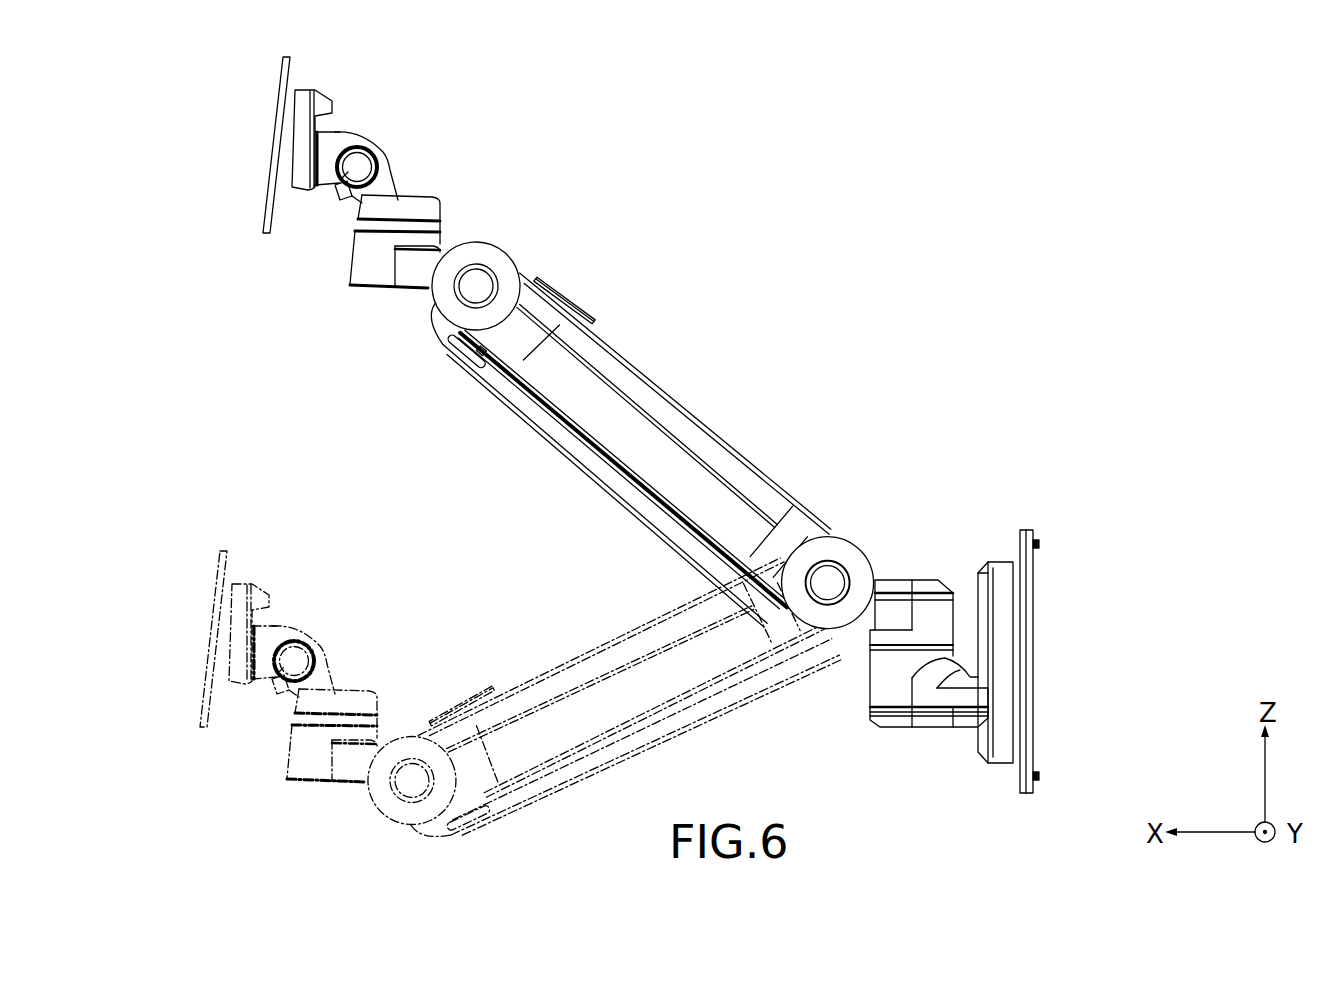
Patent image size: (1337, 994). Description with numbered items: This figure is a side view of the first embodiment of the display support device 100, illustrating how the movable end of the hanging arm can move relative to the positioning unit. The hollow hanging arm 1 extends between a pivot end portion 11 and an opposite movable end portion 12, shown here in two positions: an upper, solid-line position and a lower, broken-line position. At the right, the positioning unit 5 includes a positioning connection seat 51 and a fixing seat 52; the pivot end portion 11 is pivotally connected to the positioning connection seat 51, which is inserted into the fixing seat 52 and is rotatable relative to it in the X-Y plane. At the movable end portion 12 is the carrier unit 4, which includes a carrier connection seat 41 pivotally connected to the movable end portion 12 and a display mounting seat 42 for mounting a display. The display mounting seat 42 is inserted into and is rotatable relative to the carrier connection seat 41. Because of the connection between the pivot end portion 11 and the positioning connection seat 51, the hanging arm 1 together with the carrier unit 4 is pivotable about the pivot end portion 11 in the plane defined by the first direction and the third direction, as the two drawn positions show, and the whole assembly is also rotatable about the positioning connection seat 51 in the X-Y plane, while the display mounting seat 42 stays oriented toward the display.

The display support device 100 is at (861, 258).
The hollow hanging arm 1 is at (697, 402).
The pivot end portion 11 is at (828, 583).
The movable end portion 12 is at (476, 286).
The carrier unit 4 is at (356, 116).
The carrier connection seat 41 is at (371, 277).
The display mounting seat 42 is at (266, 196).
The positioning unit 5 is at (1047, 520).
The positioning connection seat 51 is at (948, 622).
The fixing seat 52 is at (880, 683).